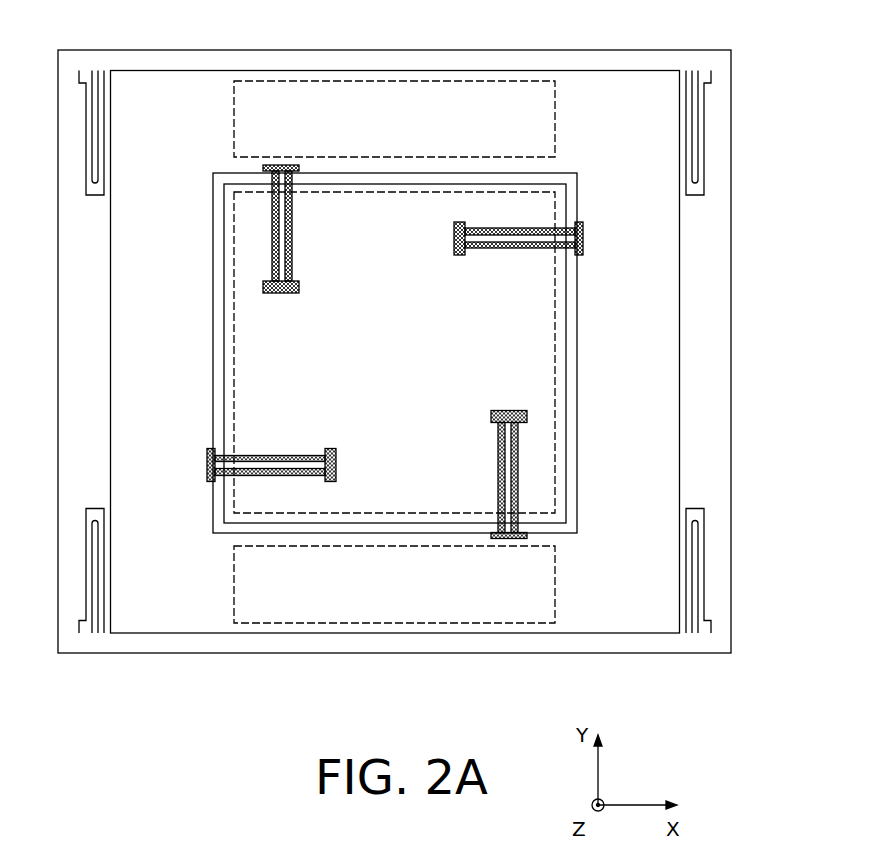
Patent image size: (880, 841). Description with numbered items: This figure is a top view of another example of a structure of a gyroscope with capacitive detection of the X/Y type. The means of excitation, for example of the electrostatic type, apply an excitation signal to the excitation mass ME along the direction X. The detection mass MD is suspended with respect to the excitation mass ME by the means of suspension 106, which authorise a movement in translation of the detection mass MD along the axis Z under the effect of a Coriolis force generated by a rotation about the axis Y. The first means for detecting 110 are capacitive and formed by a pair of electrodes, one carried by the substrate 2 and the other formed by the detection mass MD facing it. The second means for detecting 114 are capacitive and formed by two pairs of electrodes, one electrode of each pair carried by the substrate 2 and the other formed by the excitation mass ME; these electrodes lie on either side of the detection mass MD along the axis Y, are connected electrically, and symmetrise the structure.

The substrate 2 is at (559, 60).
The second means for detecting 114 is at (397, 80).
The first means for detecting 110 is at (559, 293).
The means of suspension 106 is at (283, 468).
The excitation mass ME is at (627, 236).
The detection mass MD is at (494, 378).